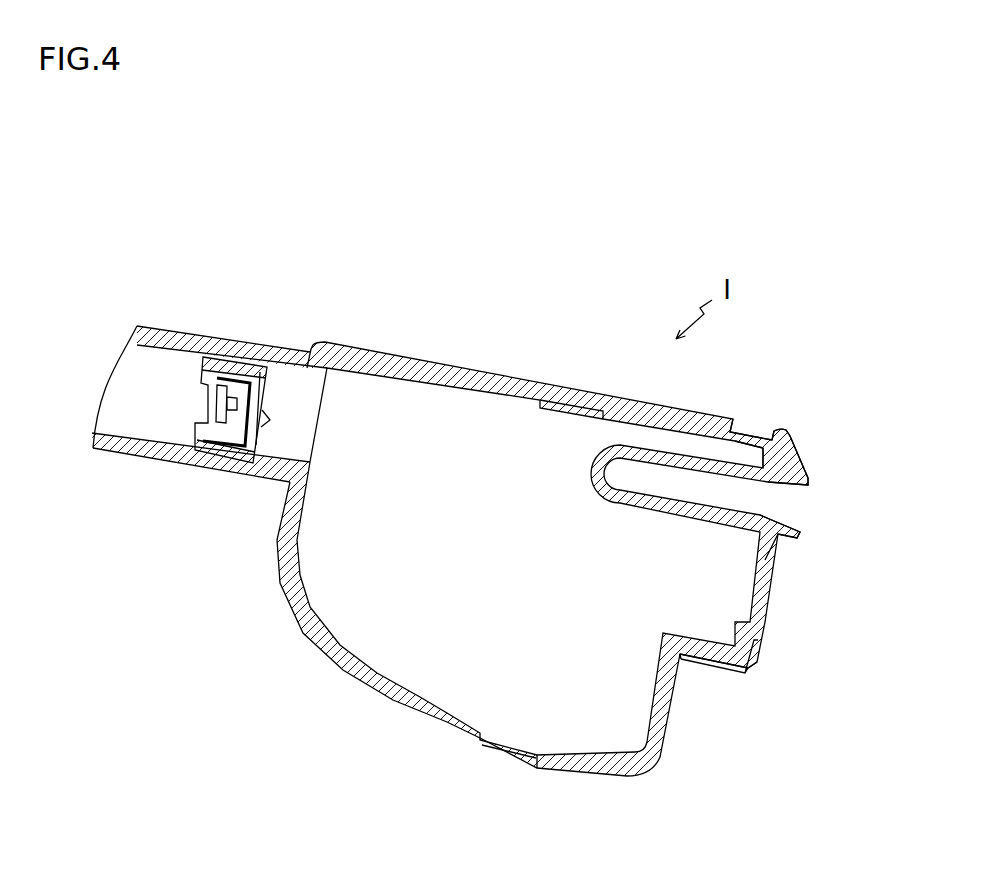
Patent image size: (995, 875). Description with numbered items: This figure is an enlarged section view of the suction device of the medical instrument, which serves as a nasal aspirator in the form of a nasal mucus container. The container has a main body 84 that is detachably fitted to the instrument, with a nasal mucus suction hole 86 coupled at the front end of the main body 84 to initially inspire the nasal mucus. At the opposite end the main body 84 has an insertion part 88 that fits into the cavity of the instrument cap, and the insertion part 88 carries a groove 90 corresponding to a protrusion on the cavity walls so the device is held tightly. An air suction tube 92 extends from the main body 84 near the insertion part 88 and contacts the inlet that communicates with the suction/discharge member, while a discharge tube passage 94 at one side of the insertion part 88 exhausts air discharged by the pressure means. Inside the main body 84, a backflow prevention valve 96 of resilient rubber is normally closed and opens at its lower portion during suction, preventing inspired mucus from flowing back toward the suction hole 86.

The main body 84 is at (705, 403).
The nasal mucus suction hole 86 is at (161, 342).
The insertion part 88 is at (755, 434).
The groove 90 is at (782, 433).
The air suction tube 92 is at (763, 514).
The discharge tube passage 94 is at (683, 668).
The backflow prevention valve 96 is at (249, 365).